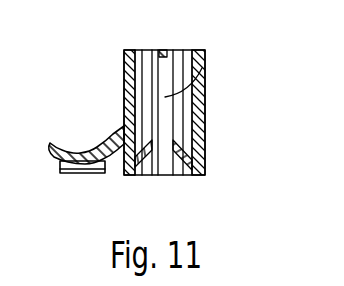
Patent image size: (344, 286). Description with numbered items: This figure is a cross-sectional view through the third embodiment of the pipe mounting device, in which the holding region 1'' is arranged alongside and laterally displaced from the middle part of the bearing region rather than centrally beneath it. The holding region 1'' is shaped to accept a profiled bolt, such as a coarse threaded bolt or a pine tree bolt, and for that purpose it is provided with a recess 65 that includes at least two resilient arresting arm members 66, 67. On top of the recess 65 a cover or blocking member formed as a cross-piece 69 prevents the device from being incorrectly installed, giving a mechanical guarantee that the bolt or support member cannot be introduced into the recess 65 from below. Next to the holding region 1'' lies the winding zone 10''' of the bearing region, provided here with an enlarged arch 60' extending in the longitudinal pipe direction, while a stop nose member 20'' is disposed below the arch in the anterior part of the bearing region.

The holding region 1'' is at (131, 92).
The winding zone 10''' is at (73, 138).
The enlarged arch 60' is at (86, 124).
The stop nose member 20'' is at (82, 192).
The cross-piece 69 is at (167, 50).
The recess 65 is at (206, 70).
The resilient arresting arm member 67 is at (206, 135).
The resilient arresting arm member 66 is at (147, 152).